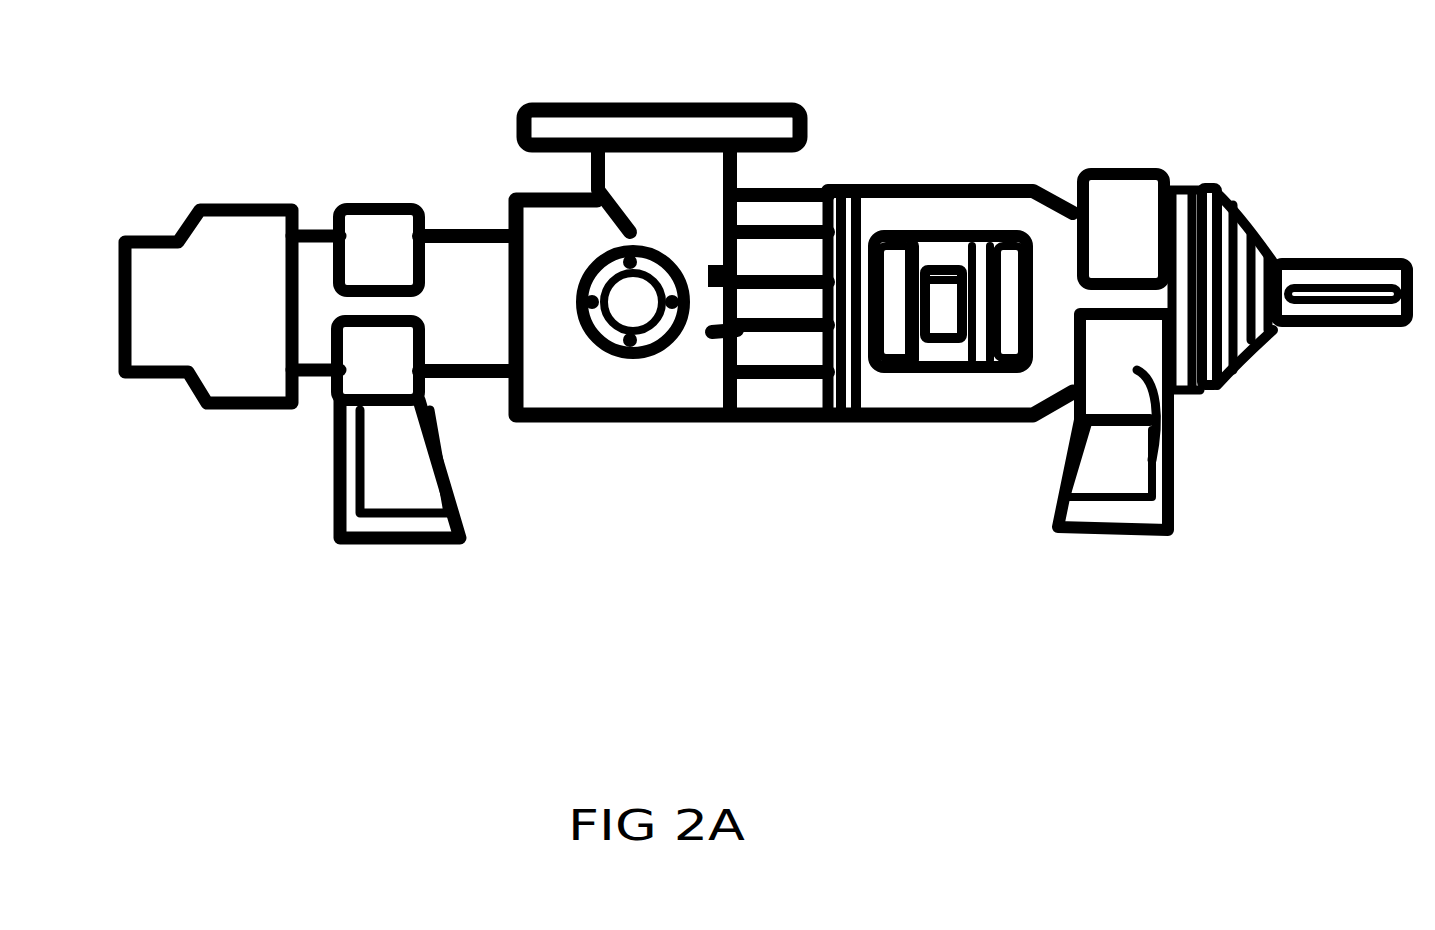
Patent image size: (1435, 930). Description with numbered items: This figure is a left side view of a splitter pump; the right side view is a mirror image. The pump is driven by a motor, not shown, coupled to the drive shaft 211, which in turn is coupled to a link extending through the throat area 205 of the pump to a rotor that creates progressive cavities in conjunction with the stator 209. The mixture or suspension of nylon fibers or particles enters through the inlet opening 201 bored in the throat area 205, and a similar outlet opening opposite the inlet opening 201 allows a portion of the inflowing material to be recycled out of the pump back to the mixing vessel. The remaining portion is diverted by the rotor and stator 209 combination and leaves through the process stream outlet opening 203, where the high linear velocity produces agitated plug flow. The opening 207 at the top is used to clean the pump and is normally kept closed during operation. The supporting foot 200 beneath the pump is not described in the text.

The support foot 200 is at (1127, 535).
The inlet opening 201 is at (640, 323).
The process stream outlet opening 203 is at (117, 335).
The throat area 205 is at (675, 380).
The opening 207 is at (683, 100).
The stator 209 is at (440, 230).
The drive shaft 211 is at (1347, 327).